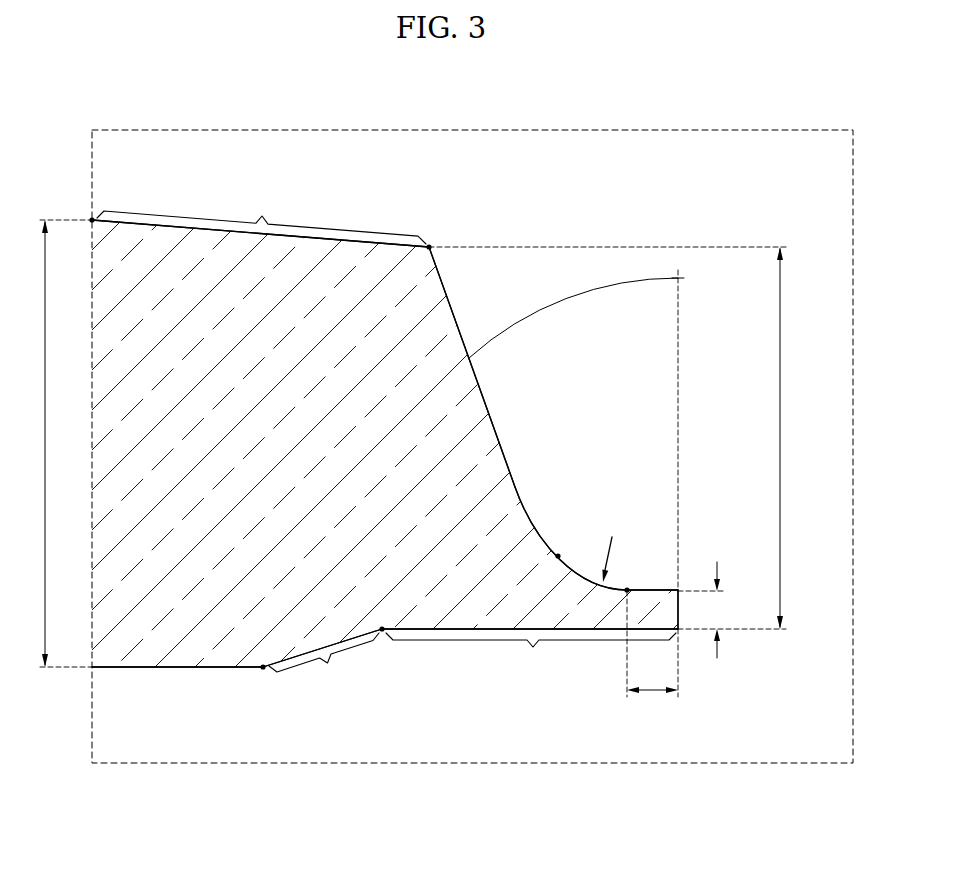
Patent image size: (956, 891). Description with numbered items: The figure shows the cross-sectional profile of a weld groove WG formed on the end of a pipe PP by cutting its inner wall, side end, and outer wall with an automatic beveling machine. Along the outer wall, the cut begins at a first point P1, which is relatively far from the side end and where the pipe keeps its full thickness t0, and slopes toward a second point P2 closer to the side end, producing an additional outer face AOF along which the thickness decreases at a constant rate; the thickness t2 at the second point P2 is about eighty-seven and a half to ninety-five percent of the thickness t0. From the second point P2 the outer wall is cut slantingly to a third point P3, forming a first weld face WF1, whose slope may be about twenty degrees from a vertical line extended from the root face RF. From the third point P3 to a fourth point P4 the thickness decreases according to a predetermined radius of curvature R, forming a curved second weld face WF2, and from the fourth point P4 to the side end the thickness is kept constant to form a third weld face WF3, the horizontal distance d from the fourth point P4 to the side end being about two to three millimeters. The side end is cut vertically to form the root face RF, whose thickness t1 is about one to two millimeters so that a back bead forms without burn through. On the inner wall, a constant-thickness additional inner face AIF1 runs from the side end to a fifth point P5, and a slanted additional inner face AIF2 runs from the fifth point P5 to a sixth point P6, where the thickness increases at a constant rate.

The weld groove WG is at (697, 222).
The sixth point P6 is at (93, 219).
The additional outer face AOF is at (260, 218).
The fifth point P5 is at (429, 246).
The third weld face WF3 is at (487, 403).
The fourth point P4 is at (558, 555).
The second weld face WF2 is at (595, 587).
The radius of curvature R is at (614, 559).
The third point P3 is at (627, 589).
The first weld face WF1 is at (662, 590).
The root face RF is at (679, 612).
The additional inner face AIF2 is at (530, 653).
The second point P2 is at (382, 632).
The additional inner face AIF1 is at (322, 662).
The first point P1 is at (263, 670).
The pipe PP is at (165, 670).
The thickness t0 is at (55, 443).
The thickness t2 is at (620, 438).
The thickness t1 is at (709, 610).
The horizontal distance d is at (652, 644).